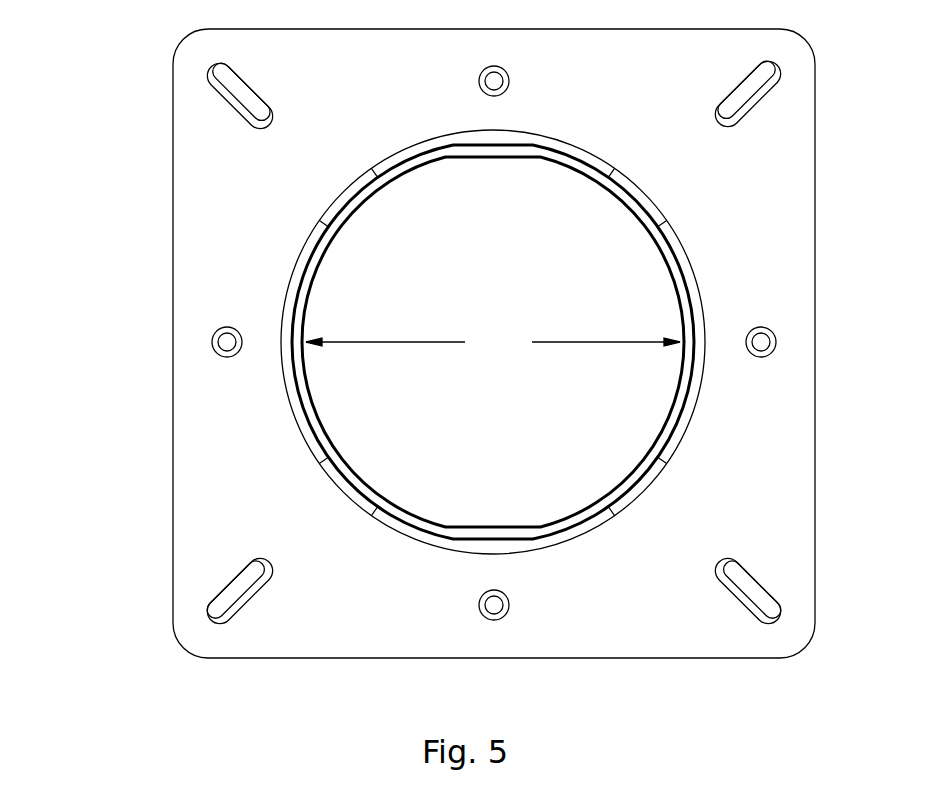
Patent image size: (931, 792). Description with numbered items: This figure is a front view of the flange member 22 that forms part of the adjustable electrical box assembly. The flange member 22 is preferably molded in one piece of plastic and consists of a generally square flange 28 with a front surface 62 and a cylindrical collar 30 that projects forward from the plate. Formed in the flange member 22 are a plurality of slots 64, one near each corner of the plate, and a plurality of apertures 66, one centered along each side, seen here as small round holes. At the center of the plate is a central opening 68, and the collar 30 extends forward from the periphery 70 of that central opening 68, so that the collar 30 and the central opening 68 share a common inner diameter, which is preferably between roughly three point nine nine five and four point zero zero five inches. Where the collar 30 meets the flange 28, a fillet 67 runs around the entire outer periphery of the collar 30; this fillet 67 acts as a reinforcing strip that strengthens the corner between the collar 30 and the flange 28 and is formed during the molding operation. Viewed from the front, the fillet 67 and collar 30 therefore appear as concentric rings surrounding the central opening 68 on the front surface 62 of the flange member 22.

The flange member 22 is at (455, 336).
The flange 28 is at (623, 107).
The collar 30 is at (667, 290).
The front surface 62 is at (531, 343).
The slots 64 is at (228, 108).
The apertures 66 is at (490, 83).
The fillet 67 is at (687, 414).
The central opening 68 is at (482, 260).
The periphery 70 is at (353, 468).